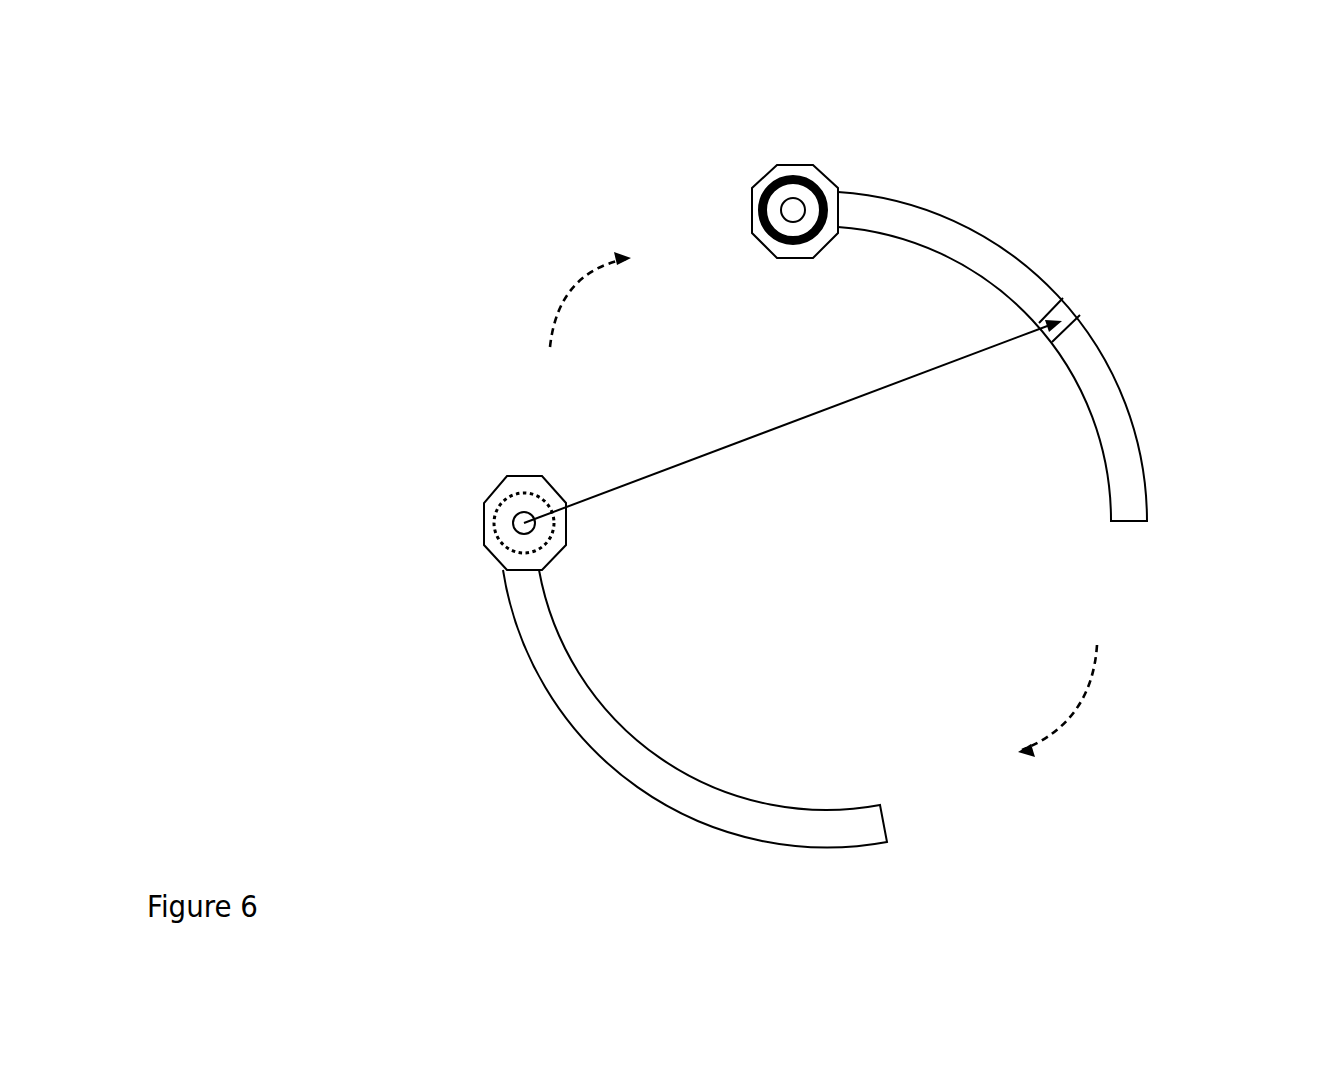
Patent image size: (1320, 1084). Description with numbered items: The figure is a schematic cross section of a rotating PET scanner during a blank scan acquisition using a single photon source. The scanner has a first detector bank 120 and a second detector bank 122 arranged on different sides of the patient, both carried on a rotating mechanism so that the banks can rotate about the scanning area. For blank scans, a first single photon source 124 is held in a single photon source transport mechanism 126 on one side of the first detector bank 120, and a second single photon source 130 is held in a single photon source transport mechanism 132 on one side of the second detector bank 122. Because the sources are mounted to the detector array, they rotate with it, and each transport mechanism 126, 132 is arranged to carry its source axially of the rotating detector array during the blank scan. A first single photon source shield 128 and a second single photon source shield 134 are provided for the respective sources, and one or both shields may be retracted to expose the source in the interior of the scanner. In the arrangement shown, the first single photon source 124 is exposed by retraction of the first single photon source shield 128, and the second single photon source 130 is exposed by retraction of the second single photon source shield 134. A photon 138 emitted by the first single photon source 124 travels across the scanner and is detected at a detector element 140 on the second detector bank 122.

The first detector bank 120 is at (571, 733).
The second detector bank 122 is at (1143, 427).
The first single photon source 124 is at (514, 513).
The single photon source transport mechanism 126 is at (483, 523).
The first single photon source shield 128 is at (502, 555).
The second single photon source 130 is at (783, 197).
The single photon source transport mechanism 132 is at (792, 163).
The second single photon source shield 134 is at (820, 184).
The photon 138 is at (740, 443).
The detector element 140 is at (1078, 314).